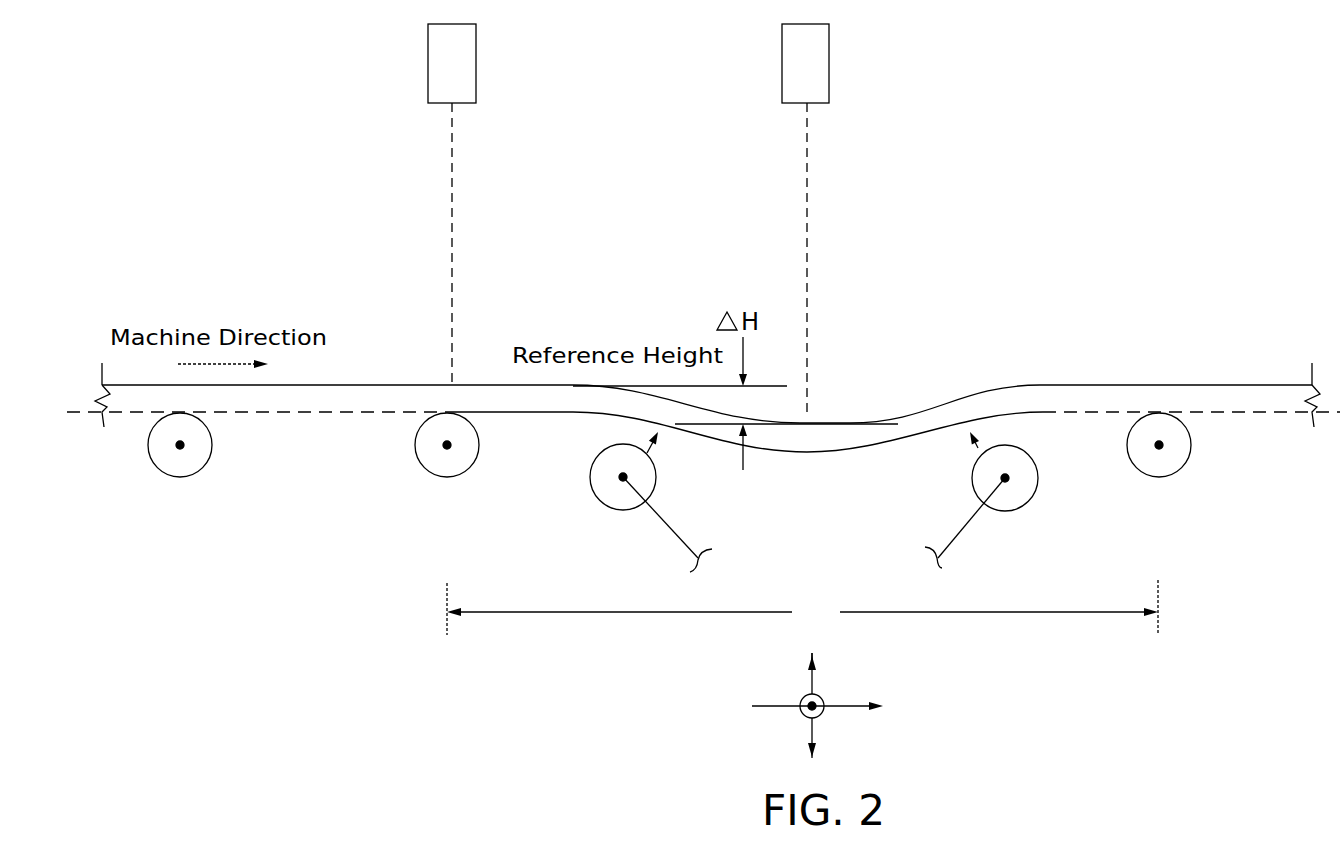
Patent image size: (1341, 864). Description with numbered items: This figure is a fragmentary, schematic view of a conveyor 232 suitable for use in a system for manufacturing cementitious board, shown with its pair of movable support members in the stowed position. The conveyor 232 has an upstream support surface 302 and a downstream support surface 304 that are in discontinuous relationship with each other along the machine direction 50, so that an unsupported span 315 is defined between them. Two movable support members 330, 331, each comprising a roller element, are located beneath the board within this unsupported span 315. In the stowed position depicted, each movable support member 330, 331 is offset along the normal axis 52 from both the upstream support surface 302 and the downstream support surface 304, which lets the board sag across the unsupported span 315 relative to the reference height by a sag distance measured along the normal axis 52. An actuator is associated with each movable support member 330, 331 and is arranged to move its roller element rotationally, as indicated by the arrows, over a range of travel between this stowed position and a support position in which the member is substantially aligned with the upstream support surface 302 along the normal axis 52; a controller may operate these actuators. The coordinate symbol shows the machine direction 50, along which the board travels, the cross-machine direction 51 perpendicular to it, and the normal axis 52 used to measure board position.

The conveyor 232 is at (290, 444).
The upstream support surface 302 is at (183, 410).
The downstream support surface 304 is at (1162, 412).
The movable support member 330 is at (603, 505).
The movable support member 331 is at (1025, 510).
The unsupported span 315 is at (802, 607).
The machine direction 50 is at (837, 707).
The cross-machine direction 51 is at (808, 712).
The normal axis 52 is at (808, 688).